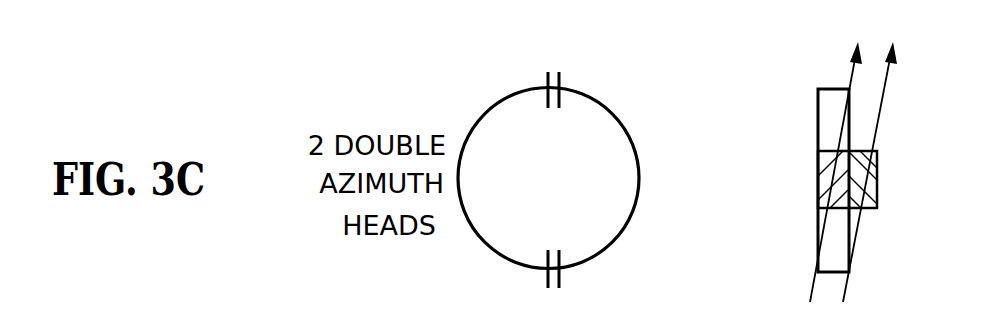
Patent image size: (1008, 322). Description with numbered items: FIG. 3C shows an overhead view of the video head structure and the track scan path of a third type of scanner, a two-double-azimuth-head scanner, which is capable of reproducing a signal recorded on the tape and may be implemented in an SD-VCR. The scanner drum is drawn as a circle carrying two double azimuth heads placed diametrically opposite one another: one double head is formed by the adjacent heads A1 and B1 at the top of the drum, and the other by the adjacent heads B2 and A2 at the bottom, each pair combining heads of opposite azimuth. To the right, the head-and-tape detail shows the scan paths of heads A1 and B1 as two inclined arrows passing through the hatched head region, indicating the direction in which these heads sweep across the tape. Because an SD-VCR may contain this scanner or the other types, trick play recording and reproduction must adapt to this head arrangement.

The first azimuth video head A1 is at (674, 159).
The first azimuth video head of opposite azimuth B1 is at (744, 159).
The second azimuth video head A2 is at (592, 276).
The second azimuth video head of opposite azimuth B2 is at (512, 276).